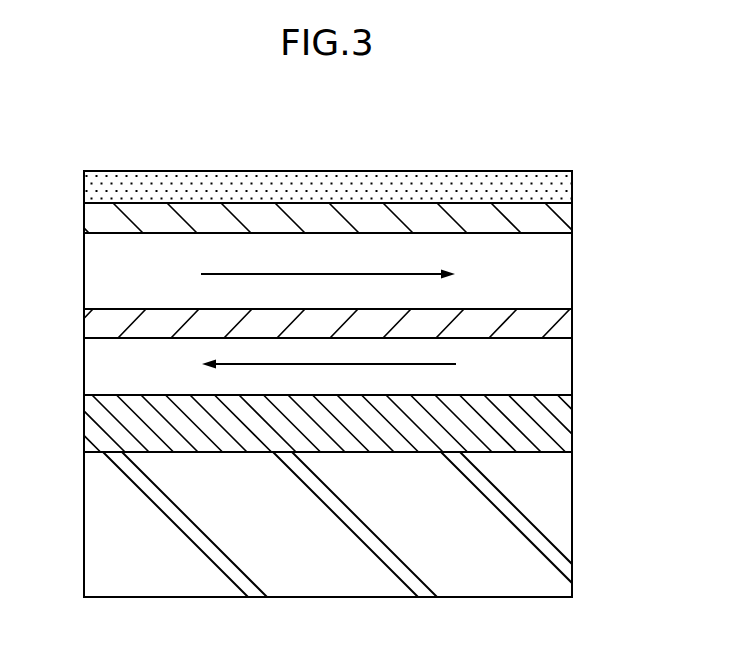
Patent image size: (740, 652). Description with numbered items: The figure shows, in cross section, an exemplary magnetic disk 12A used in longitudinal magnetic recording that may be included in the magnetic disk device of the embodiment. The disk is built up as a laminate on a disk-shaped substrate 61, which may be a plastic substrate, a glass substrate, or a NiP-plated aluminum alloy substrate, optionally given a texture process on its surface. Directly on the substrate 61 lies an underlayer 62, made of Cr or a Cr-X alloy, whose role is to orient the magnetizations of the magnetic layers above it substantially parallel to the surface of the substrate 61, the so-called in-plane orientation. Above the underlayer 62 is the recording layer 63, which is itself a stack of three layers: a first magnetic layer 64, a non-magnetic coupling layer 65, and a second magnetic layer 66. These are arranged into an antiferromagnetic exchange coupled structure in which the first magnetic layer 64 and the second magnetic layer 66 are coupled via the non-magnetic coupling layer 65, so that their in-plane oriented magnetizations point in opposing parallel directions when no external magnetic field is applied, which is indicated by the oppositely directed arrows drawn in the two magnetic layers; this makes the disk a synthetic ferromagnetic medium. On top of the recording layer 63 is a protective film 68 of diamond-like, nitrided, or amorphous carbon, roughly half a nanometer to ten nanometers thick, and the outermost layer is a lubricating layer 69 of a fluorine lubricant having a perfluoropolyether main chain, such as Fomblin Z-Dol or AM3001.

The magnetic disk 12A is at (66, 115).
The substrate 61 is at (572, 511).
The underlayer 62 is at (572, 424).
The recording layer 63 is at (386, 314).
The first magnetic layer 64 is at (369, 366).
The non-magnetic coupling layer 65 is at (572, 317).
The second magnetic layer 66 is at (572, 264).
The protective film 68 is at (572, 213).
The lubricating layer 69 is at (572, 183).